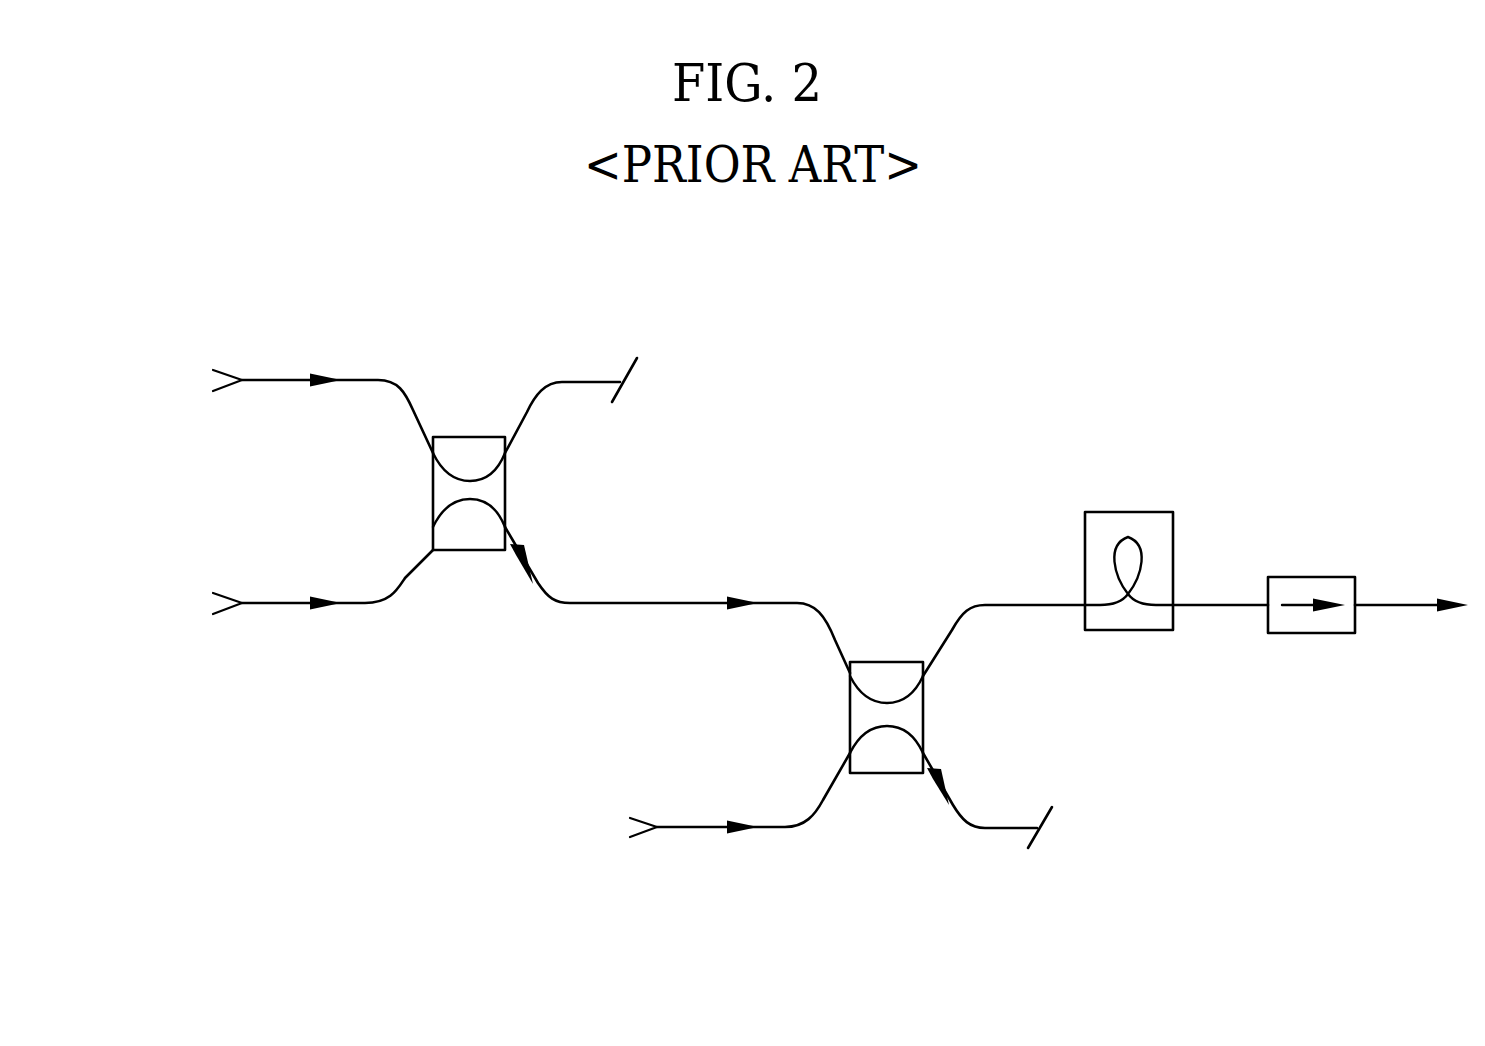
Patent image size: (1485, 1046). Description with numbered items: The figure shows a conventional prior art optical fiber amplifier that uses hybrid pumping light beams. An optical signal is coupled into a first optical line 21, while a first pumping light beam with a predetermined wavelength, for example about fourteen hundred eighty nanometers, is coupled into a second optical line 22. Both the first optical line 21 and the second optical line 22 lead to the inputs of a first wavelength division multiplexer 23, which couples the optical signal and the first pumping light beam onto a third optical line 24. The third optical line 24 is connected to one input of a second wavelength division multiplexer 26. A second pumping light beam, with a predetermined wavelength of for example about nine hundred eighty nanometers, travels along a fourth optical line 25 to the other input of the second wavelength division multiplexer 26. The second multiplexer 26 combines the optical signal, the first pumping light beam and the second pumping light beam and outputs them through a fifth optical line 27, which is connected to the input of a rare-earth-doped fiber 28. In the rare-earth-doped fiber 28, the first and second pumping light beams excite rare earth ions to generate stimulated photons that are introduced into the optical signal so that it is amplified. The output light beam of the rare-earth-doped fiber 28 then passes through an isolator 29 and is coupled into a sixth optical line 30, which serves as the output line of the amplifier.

The first optical line 21 is at (267, 607).
The second optical line 22 is at (267, 380).
The first wavelength division multiplexer 23 is at (461, 551).
The third optical line 24 is at (668, 607).
The fourth optical line 25 is at (683, 831).
The second wavelength division multiplexer 26 is at (875, 774).
The fifth optical line 27 is at (1027, 608).
The rare-earth-doped fiber 28 is at (1127, 512).
The isolator 29 is at (1316, 577).
The sixth optical line 30 is at (1405, 603).